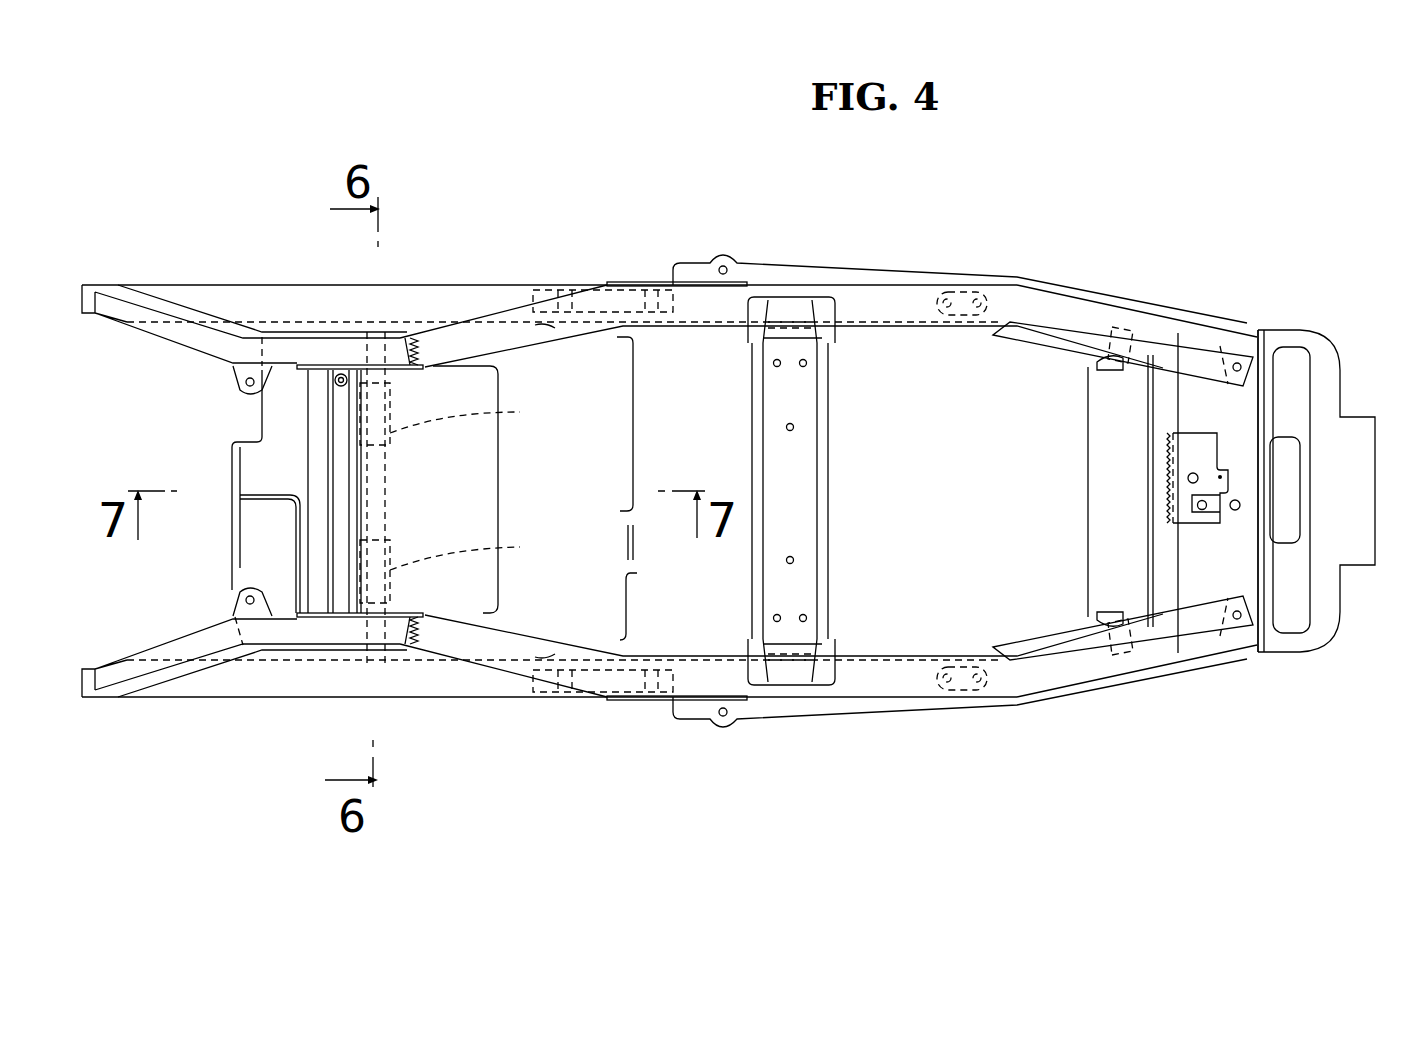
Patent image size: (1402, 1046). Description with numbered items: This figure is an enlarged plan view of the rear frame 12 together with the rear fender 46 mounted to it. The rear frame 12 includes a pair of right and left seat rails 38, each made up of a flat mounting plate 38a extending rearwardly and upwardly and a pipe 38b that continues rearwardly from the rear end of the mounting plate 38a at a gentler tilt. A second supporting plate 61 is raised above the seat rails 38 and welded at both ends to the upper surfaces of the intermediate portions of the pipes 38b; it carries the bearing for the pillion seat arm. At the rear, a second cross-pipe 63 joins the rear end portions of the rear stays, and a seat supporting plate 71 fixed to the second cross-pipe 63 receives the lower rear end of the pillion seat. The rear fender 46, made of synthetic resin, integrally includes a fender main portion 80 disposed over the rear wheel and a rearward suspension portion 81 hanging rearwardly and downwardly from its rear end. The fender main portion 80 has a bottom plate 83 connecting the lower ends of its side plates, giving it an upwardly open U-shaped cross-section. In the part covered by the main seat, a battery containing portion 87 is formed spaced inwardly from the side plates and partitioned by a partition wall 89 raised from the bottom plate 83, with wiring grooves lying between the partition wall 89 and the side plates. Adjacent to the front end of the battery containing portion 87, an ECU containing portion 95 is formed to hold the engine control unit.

The rear frame 12 is at (773, 278).
The seat rail 38 is at (455, 168).
The mounting plate 38a is at (362, 348).
The pipe 38b is at (597, 293).
The rear fender 46 is at (1105, 782).
The second supporting plate 61 is at (822, 472).
The second cross-pipe 63 is at (1160, 578).
The seat supporting plate 71 is at (1187, 453).
The fender main portion 80 is at (1042, 702).
The rearward suspension portion 81 is at (1305, 645).
The bottom plate 83 is at (950, 504).
The battery containing portion 87 is at (436, 504).
The partition wall 89 is at (500, 447).
The ECU containing portion 95 is at (316, 573).